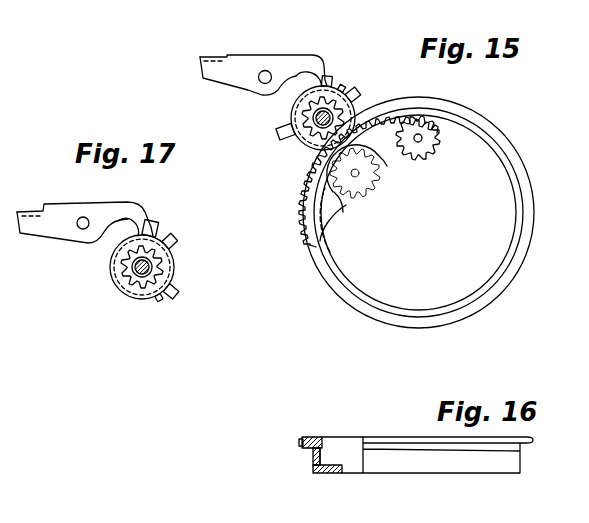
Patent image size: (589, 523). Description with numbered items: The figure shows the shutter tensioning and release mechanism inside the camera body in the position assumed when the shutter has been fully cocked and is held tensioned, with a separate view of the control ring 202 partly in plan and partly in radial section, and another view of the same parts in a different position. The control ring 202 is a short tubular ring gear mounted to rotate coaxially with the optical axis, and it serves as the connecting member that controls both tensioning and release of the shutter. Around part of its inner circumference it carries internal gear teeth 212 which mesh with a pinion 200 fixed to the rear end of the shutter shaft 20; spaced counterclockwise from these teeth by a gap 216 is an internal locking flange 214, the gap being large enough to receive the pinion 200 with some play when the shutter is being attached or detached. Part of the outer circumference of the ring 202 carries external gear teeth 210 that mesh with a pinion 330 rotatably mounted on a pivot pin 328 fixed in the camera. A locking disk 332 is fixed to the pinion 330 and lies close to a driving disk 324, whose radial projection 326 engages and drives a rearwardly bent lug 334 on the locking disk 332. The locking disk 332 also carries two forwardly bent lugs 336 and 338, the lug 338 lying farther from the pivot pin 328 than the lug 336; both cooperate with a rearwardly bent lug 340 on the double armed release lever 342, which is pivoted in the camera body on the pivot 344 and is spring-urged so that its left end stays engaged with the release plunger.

In FIG. 15, the shutter shaft 20 is at (419, 141).
In FIG. 15, the pinion 200 is at (439, 150).
In FIG. 15, the control ring 202 is at (449, 105).
In FIG. 16, the control ring 202 is at (312, 460).
In FIG. 15, the external gear teeth 210 is at (310, 172).
In FIG. 16, the external gear teeth 210 is at (300, 441).
In FIG. 15, the internal gear teeth 212 is at (406, 138).
In FIG. 15, the internal locking flange 214 is at (343, 214).
In FIG. 16, the internal locking flange 214 is at (328, 473).
In FIG. 15, the gap 216 is at (385, 163).
In FIG. 15, the driving disk 324 is at (294, 108).
In FIG. 17, the driving disk 324 is at (113, 251).
In FIG. 15, the radial projection 326 is at (357, 92).
In FIG. 17, the radial projection 326 is at (172, 239).
In FIG. 15, the pivot pin 328 is at (318, 124).
In FIG. 17, the pivot pin 328 is at (139, 271).
In FIG. 15, the pinion 330 is at (301, 117).
In FIG. 17, the pinion 330 is at (121, 278).
In FIG. 15, the locking disk 332 is at (358, 105).
In FIG. 17, the locking disk 332 is at (110, 267).
In FIG. 15, the rearwardly bent lug 334 is at (343, 86).
In FIG. 17, the rearwardly bent lug 334 is at (159, 302).
In FIG. 15, the forwardly bent lug 336 is at (328, 76).
In FIG. 17, the forwardly bent lug 336 is at (177, 295).
In FIG. 15, the forwardly bent lug 338 is at (278, 130).
In FIG. 17, the forwardly bent lug 338 is at (152, 221).
In FIG. 15, the rearwardly bent lug 340 is at (305, 82).
In FIG. 17, the rearwardly bent lug 340 is at (122, 229).
In FIG. 15, the double armed release lever 342 is at (268, 63).
In FIG. 17, the double armed release lever 342 is at (68, 213).
In FIG. 15, the pivot 344 is at (262, 83).
In FIG. 17, the pivot 344 is at (80, 229).